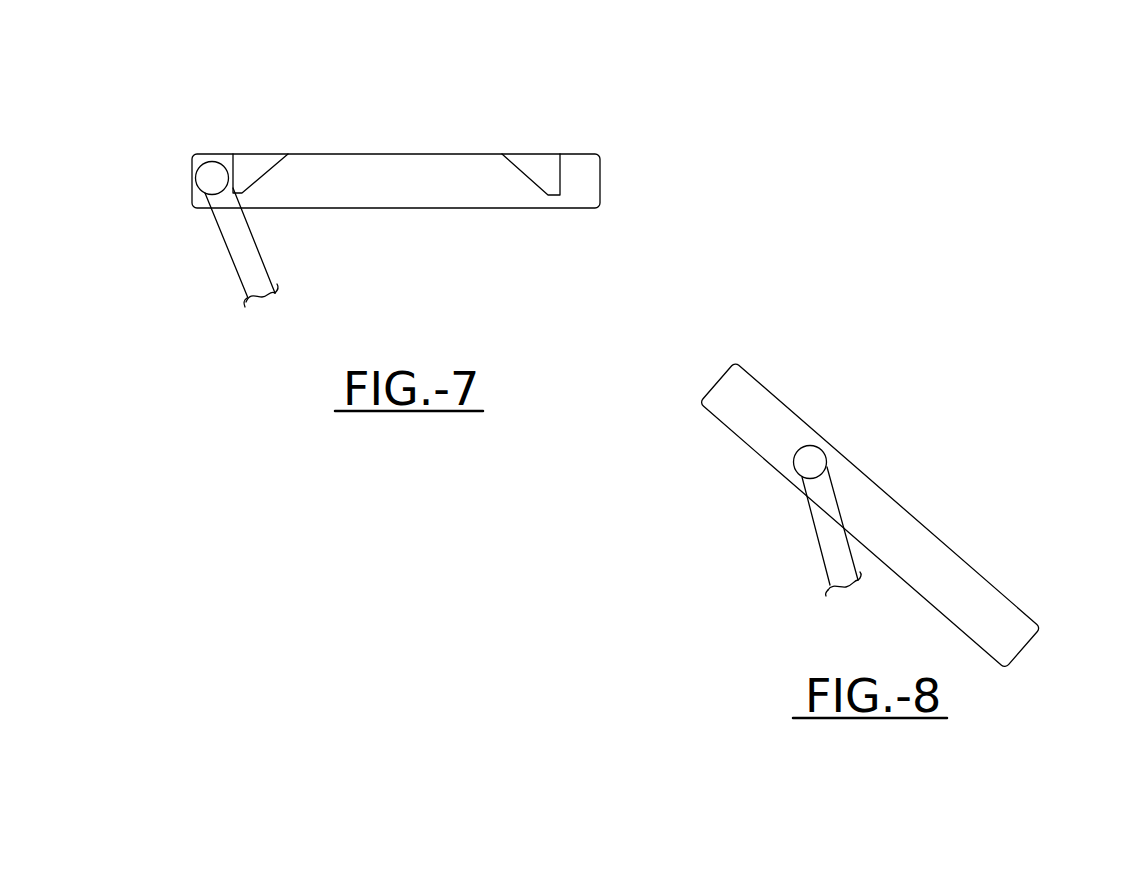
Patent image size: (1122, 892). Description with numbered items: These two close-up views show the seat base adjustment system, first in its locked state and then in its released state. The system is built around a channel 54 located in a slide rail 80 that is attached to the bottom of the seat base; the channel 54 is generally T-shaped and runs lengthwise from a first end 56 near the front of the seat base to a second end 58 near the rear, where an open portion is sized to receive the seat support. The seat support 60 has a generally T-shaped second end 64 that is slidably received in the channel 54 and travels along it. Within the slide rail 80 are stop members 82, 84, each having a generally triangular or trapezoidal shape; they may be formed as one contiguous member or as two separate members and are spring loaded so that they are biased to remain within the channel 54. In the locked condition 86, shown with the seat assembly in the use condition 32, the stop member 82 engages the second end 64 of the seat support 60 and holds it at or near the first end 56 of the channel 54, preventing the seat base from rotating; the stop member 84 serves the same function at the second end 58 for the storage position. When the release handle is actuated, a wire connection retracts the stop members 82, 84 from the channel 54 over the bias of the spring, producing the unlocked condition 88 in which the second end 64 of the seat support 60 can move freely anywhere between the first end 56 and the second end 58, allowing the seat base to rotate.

In FIG. 7, the use condition 32 is at (207, 139).
In FIG. 7, the channel 54 is at (415, 151).
In FIG. 8, the channel 54 is at (921, 499).
In FIG. 7, the first end of the channel 56 is at (190, 177).
In FIG. 8, the first end of the channel 56 is at (712, 378).
In FIG. 7, the second end of the channel 58 is at (603, 178).
In FIG. 8, the second end of the channel 58 is at (1030, 651).
In FIG. 7, the seat support 60 is at (238, 258).
In FIG. 8, the seat support 60 is at (835, 553).
In FIG. 7, the second end of the seat support 64 is at (198, 197).
In FIG. 8, the second end of the seat support 64 is at (784, 484).
In FIG. 7, the slide rail 80 is at (238, 130).
In FIG. 8, the slide rail 80 is at (703, 355).
In FIG. 7, the stop member 82 is at (250, 162).
In FIG. 7, the stop member 84 is at (545, 170).
In FIG. 7, the locked condition 86 is at (407, 218).
In FIG. 8, the unlocked condition 88 is at (856, 424).